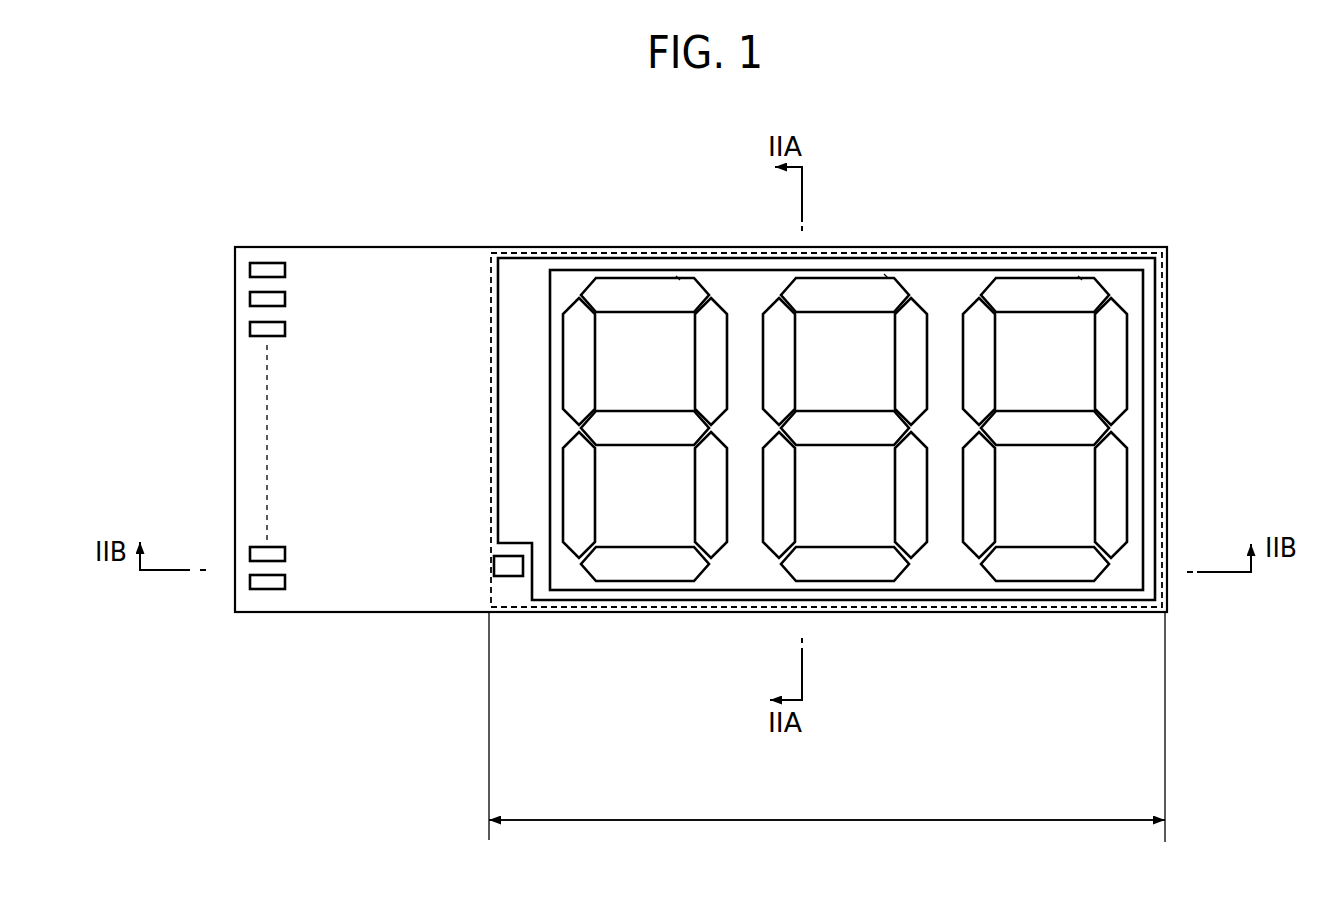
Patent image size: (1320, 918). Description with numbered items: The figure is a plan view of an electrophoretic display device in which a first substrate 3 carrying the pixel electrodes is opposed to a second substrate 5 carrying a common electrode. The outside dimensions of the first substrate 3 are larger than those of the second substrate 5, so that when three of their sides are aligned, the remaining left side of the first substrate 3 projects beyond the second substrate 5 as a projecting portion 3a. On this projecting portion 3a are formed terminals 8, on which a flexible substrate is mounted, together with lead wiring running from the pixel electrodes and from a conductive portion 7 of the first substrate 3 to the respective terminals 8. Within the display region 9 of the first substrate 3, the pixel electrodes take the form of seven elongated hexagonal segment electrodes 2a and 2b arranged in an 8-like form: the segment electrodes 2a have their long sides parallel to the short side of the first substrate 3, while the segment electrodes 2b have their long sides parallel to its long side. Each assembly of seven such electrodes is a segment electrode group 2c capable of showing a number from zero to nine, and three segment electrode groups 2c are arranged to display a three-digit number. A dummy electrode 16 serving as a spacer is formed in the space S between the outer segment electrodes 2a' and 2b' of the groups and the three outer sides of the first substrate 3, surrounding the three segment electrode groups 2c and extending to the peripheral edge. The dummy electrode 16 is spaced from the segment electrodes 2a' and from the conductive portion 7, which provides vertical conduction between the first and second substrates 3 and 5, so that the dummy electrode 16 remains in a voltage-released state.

The segment electrode 2a is at (744, 441).
The outer segment electrode 2a' is at (1192, 428).
The segment electrode 2b is at (845, 437).
The outer segment electrode 2b' is at (1045, 436).
The segment electrode group 2c is at (676, 275).
The first substrate 3 is at (1128, 615).
The projecting portion 3a is at (397, 592).
The second substrate 5 is at (912, 613).
The conductive portion 7 is at (505, 578).
The terminals 8 is at (250, 330).
The display region 9 is at (860, 820).
The dummy electrode 16 is at (511, 299).
The space S is at (1150, 297).